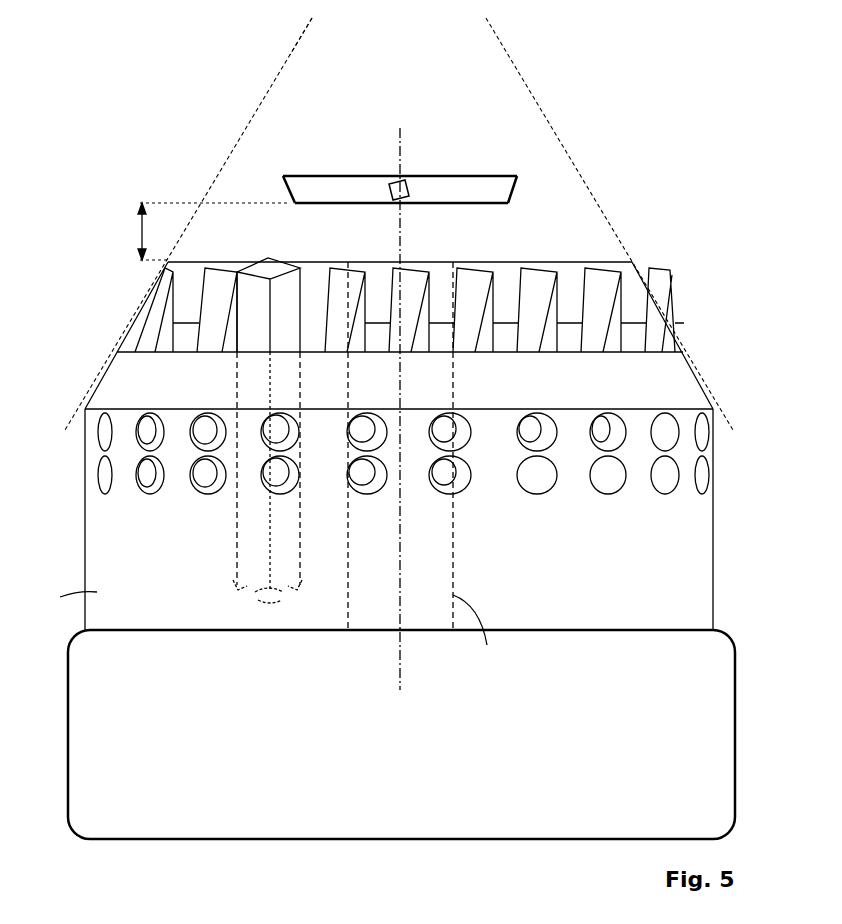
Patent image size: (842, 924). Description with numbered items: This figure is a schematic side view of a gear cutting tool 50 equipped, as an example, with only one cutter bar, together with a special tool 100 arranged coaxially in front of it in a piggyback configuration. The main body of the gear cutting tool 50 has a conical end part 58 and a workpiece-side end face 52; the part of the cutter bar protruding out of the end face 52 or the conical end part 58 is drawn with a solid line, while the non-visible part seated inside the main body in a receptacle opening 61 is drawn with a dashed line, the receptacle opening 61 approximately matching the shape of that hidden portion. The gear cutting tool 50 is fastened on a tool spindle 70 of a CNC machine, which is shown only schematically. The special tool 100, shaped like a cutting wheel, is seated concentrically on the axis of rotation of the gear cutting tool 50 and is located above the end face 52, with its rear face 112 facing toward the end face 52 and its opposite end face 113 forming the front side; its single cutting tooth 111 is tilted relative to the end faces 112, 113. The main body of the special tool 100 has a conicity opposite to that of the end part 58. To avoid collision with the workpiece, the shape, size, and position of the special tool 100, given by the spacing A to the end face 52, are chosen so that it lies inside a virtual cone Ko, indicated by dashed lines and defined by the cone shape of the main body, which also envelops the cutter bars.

The special tool 100 is at (526, 174).
The cutting tooth 111 is at (410, 190).
The rear face 112 is at (333, 203).
The end face 113 is at (333, 176).
The gear cutting tool 50 is at (660, 265).
The workpiece-side end face 52 is at (537, 265).
The receptacle opening 61 is at (470, 268).
The end part 58 is at (717, 263).
The tool spindle 70 is at (505, 817).
The virtual cone Ko is at (262, 87).
The spacing A is at (207, 231).